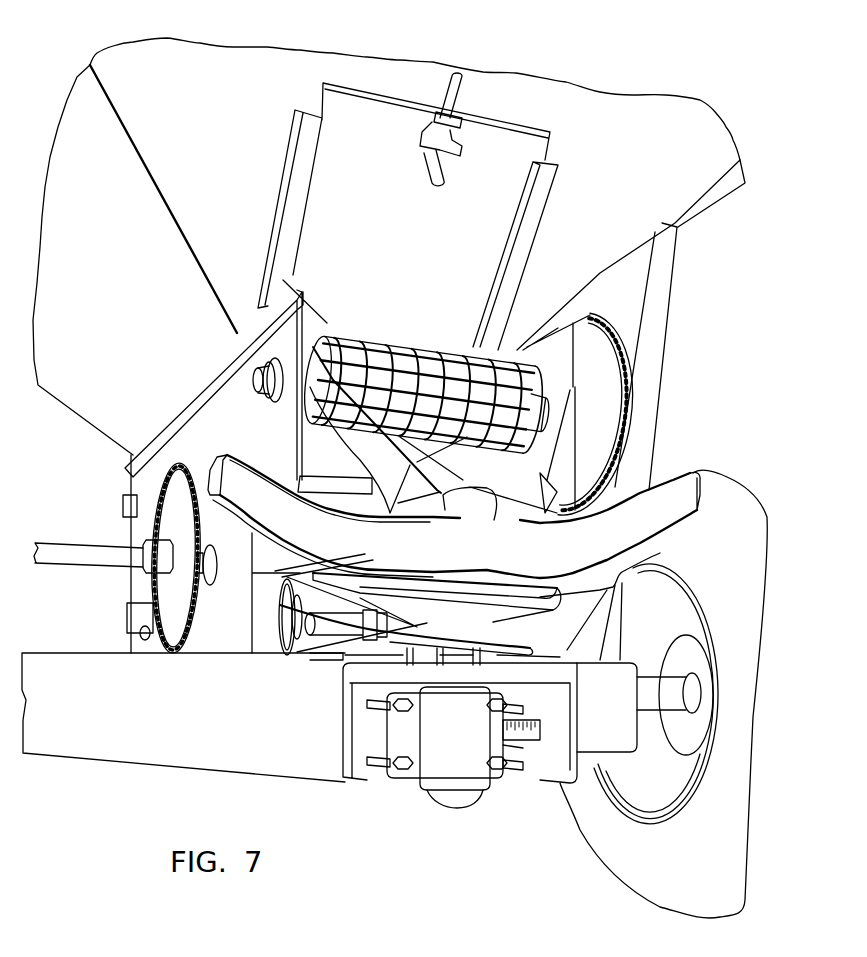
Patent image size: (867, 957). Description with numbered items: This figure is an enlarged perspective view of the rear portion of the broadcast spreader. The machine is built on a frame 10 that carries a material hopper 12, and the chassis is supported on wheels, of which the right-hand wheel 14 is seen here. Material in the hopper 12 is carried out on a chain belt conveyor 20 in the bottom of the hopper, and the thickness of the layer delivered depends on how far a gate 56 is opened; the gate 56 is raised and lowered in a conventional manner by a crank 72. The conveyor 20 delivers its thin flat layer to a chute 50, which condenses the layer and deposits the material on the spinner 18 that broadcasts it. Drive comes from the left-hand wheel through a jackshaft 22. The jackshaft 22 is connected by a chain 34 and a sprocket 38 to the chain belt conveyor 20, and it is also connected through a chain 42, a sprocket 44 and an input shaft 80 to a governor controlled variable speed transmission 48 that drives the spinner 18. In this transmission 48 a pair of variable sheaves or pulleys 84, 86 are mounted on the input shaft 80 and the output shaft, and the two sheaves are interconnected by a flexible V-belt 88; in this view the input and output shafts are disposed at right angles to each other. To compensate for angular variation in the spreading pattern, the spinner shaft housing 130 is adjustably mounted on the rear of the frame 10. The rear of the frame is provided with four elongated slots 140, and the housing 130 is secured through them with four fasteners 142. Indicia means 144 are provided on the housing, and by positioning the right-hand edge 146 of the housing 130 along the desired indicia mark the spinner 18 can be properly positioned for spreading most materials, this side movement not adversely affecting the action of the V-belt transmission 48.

The frame 10 is at (147, 755).
The material hopper 12 is at (263, 60).
The right-hand wheel 14 is at (618, 868).
The spinner 18 is at (612, 511).
The chain belt conveyor 20 is at (433, 343).
The jackshaft 22 is at (85, 558).
The chain 34 is at (630, 367).
The sprocket 38 is at (602, 410).
The chain 42 is at (150, 592).
The sprocket 44 is at (172, 602).
The governor controlled variable speed transmission 48 is at (301, 672).
The chute 50 is at (549, 457).
The gate 56 is at (528, 152).
The crank 72 is at (459, 96).
The input shaft 80 is at (340, 623).
The variable sheave 84 is at (302, 627).
The variable sheave 86 is at (536, 631).
The V-belt 88 is at (343, 598).
The spinner shaft housing 130 is at (433, 773).
The elongated slots 140 is at (378, 757).
The fasteners 142 is at (490, 760).
The indicia means 144 is at (538, 735).
The right-hand edge 146 is at (503, 757).